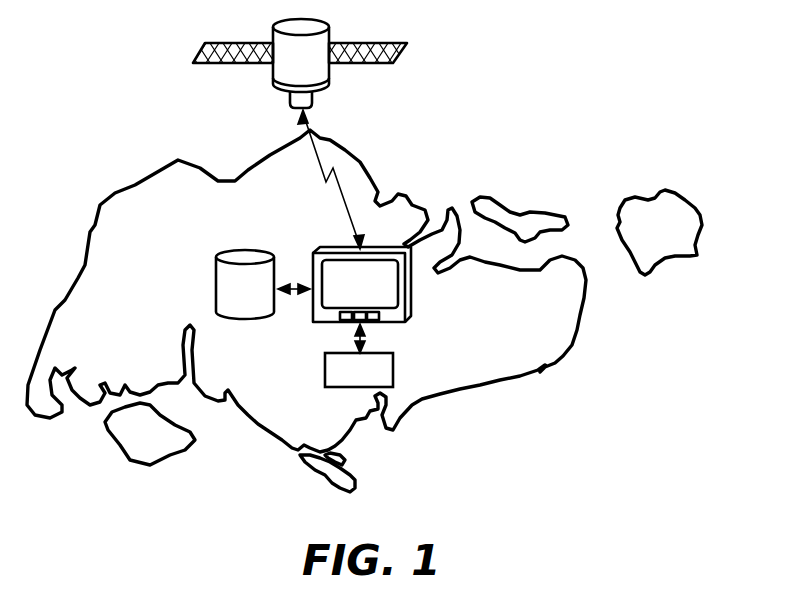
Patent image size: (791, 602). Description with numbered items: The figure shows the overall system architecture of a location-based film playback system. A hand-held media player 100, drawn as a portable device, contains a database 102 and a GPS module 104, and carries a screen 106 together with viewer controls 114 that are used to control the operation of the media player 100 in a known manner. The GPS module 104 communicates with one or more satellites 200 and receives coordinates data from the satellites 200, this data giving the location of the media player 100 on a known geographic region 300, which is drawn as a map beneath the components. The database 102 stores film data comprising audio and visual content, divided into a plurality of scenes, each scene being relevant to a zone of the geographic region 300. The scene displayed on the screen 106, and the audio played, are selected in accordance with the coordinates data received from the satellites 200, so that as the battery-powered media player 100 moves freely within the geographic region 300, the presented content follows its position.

The hand-held media player 100 is at (469, 346).
The database 102 is at (247, 318).
The GPS module 104 is at (360, 387).
The screen 106 is at (362, 287).
The viewer controls 114 is at (375, 318).
The satellite 200 is at (272, 74).
The geographic region 300 is at (410, 204).